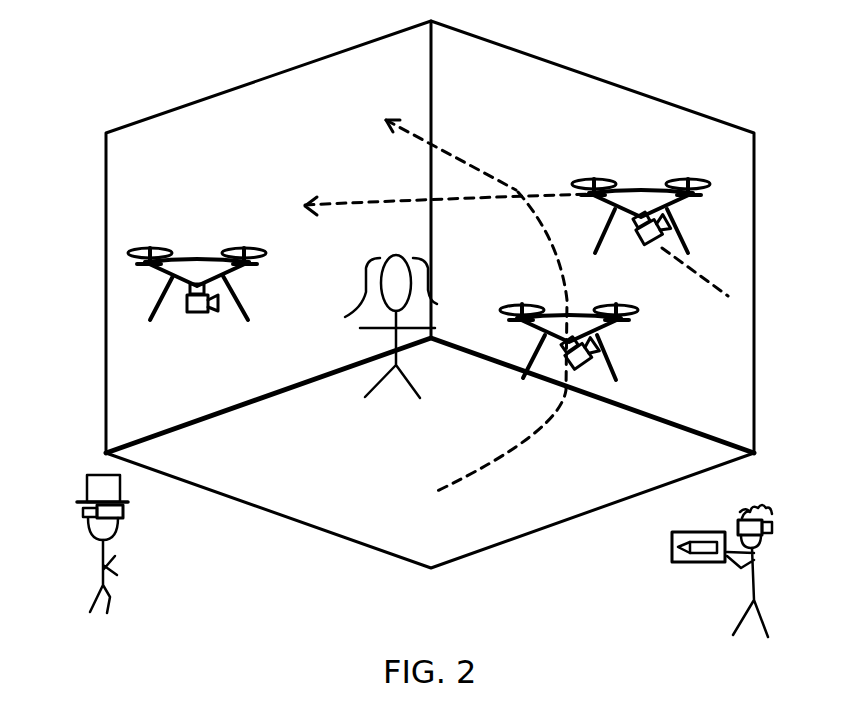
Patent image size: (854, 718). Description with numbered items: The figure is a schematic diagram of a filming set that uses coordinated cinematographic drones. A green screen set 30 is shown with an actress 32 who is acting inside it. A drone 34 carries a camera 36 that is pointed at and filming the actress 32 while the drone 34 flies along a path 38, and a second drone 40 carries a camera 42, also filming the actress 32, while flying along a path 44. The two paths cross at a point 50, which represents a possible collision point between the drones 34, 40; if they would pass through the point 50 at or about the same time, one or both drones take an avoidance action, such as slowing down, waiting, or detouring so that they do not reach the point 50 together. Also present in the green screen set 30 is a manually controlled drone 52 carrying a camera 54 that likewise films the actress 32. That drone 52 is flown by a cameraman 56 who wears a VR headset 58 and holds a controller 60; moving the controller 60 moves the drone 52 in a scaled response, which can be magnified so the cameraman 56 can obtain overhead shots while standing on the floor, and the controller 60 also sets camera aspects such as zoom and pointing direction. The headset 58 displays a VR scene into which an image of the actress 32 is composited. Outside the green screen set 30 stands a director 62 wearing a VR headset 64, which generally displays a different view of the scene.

The green screen set 30 is at (150, 118).
The actress 32 is at (366, 279).
The drone 34 is at (588, 374).
The camera 36 is at (584, 386).
The path 38 is at (478, 164).
The drone 40 is at (650, 219).
The camera 42 is at (679, 251).
The path 44 is at (353, 201).
The point 50 is at (518, 197).
The manually controlled drone 52 is at (197, 285).
The camera 54 is at (194, 324).
The cameraman 56 is at (707, 561).
The VR headset 58 is at (738, 526).
The controller 60 is at (688, 563).
The director 62 is at (106, 530).
The VR headset 64 is at (124, 512).